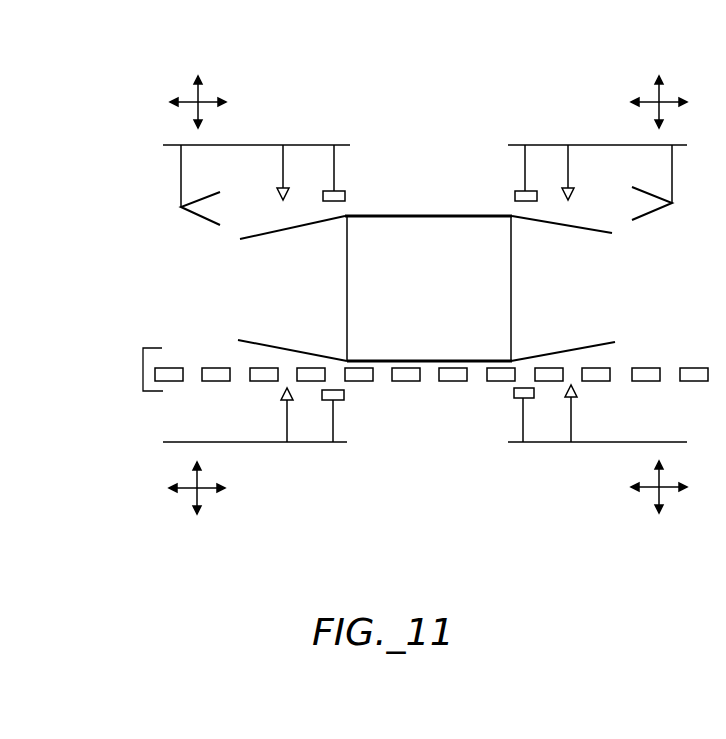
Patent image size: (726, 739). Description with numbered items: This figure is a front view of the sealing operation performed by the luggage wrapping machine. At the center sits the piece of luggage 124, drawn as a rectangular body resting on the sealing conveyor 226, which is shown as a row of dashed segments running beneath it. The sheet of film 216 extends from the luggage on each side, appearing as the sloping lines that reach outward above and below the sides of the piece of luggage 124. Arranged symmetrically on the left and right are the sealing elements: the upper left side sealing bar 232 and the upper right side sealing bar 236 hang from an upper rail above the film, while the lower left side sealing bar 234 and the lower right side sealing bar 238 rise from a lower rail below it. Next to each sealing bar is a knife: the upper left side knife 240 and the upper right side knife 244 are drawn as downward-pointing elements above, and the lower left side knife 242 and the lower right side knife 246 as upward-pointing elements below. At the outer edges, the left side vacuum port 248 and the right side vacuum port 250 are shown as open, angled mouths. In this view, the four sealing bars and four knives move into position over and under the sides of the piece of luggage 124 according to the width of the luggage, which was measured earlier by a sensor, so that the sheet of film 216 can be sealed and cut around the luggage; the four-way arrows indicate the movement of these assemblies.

The piece of luggage 124 is at (347, 251).
The sheet of film 216 is at (533, 356).
The sealing conveyor 226 is at (142, 368).
The upper left side sealing bar 232 is at (345, 190).
The lower left side sealing bar 234 is at (345, 398).
The upper right side sealing bar 236 is at (515, 189).
The lower right side sealing bar 238 is at (512, 396).
The upper left side knife 240 is at (278, 190).
The lower left side knife 242 is at (282, 395).
The upper right side knife 244 is at (573, 188).
The lower right side knife 246 is at (577, 391).
The left side vacuum port 248 is at (193, 213).
The right side vacuum port 250 is at (648, 215).